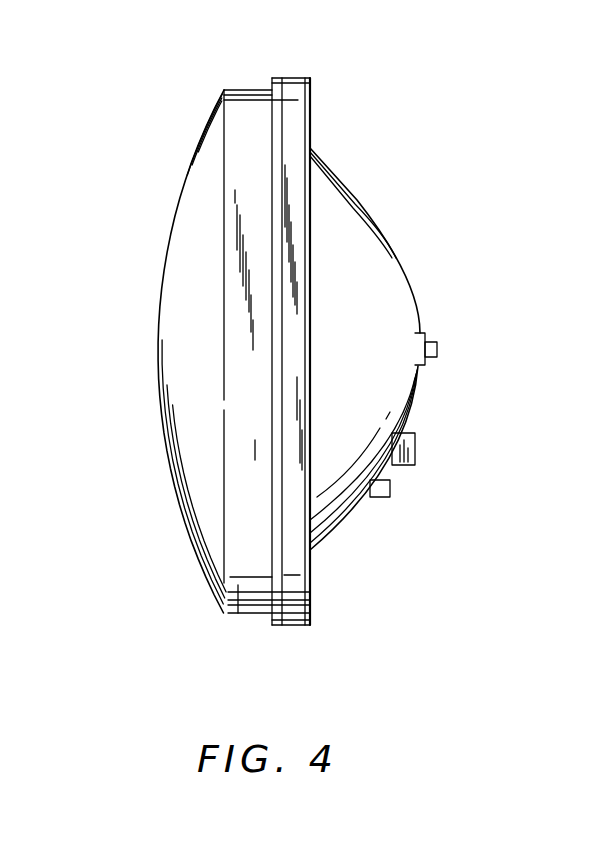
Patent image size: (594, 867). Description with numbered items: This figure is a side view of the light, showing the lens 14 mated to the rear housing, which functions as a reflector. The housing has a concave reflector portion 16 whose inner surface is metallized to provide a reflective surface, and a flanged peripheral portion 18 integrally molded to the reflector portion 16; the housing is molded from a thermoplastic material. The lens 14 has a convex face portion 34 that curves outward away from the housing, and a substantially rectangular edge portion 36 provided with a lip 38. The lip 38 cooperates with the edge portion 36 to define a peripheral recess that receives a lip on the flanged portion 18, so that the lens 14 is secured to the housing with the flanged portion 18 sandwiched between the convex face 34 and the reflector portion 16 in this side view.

The lens 14 is at (208, 482).
The concave reflector portion 16 is at (388, 273).
The flanged peripheral portion 18 is at (290, 115).
The convex face portion 34 is at (213, 128).
The edge portion 36 is at (240, 617).
The lip 38 is at (290, 570).